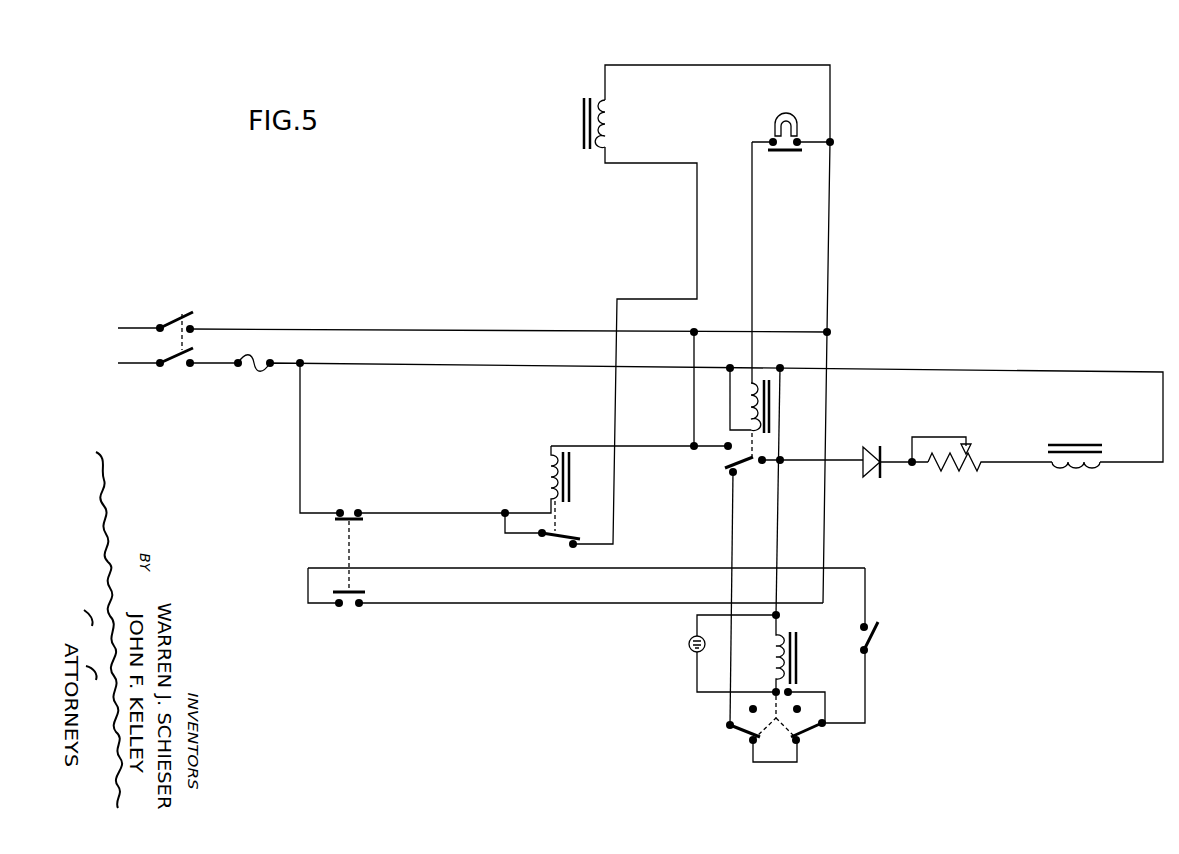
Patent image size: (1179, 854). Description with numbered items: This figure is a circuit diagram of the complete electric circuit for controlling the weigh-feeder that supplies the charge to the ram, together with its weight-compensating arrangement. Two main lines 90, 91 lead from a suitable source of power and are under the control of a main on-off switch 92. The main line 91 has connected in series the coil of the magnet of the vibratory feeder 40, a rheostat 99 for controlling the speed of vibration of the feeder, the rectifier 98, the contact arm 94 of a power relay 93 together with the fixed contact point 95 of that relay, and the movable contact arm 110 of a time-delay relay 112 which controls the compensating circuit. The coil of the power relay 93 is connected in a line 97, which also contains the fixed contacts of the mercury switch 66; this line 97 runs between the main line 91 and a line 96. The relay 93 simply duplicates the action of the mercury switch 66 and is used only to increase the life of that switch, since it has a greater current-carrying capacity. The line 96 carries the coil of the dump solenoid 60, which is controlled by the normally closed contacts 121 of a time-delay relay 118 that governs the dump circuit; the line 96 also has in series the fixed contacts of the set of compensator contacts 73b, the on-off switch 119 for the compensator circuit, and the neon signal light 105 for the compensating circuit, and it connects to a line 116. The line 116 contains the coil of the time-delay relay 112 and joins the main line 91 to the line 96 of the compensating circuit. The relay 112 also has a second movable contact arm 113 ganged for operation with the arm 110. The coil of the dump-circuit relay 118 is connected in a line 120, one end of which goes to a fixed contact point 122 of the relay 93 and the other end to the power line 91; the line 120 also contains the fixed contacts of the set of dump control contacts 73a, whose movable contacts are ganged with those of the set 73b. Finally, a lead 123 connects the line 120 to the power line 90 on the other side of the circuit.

The vibratory feeder 40 is at (1075, 438).
The dump solenoid 60 is at (576, 87).
The mercury switch 66 is at (816, 118).
The dump control contacts 73a is at (350, 511).
The compensator contacts 73b is at (352, 604).
The main line 90 is at (125, 326).
The main line 91 is at (138, 366).
The main on-off switch 92 is at (197, 331).
The power relay 93 is at (771, 406).
The contact arm 94 is at (748, 461).
The fixed contact point 95 is at (730, 476).
The line 96 is at (716, 63).
The line 97 is at (753, 222).
The rectifier 98 is at (877, 447).
The rheostat 99 is at (941, 447).
The neon signal light 105 is at (690, 648).
The movable contact arm 110 is at (740, 736).
The time-delay relay 112 is at (796, 660).
The second movable contact arm 113 is at (806, 740).
The line 116 is at (784, 541).
The time-delay relay 118 is at (549, 492).
The on-off switch 119 is at (874, 637).
The line 120 is at (434, 510).
The normally closed contacts 121 is at (556, 538).
The fixed contact point 122 is at (724, 450).
The lead 123 is at (694, 375).